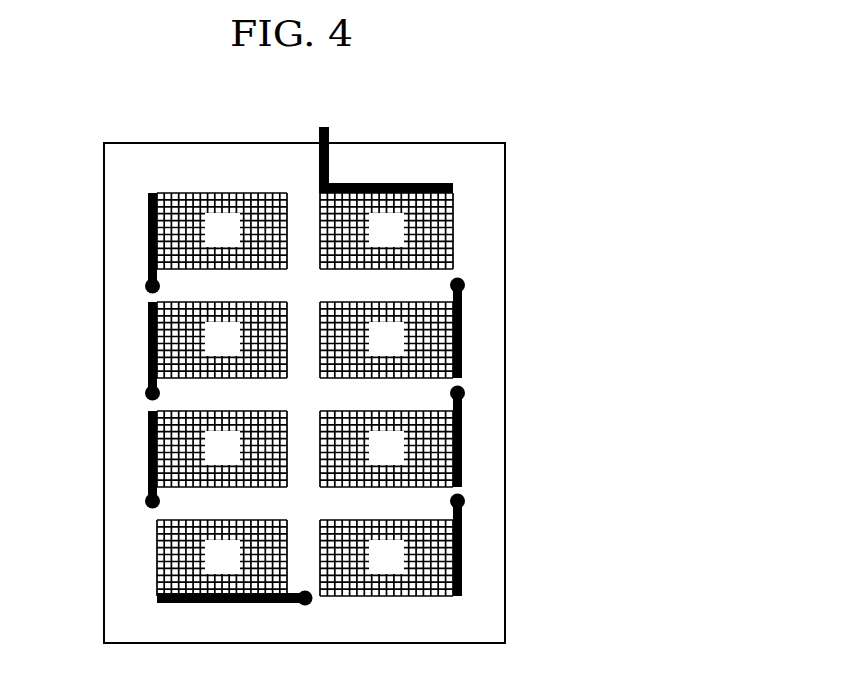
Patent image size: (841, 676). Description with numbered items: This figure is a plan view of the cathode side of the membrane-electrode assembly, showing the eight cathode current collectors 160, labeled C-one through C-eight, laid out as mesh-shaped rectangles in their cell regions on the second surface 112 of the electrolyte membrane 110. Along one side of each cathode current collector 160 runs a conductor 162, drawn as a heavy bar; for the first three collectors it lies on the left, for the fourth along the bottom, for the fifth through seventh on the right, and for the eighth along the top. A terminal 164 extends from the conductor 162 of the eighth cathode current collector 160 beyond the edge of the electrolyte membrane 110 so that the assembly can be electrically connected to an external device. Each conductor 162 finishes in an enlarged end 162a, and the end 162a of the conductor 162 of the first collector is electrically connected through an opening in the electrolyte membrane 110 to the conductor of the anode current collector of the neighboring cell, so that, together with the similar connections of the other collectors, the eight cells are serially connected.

The electrolyte membrane 110 is at (308, 353).
The second surface 112 is at (412, 162).
The cathode current collector 160 is at (178, 193).
The conductor 162 is at (443, 183).
The end of the conductor 162a is at (146, 286).
The terminal 164 is at (322, 127).